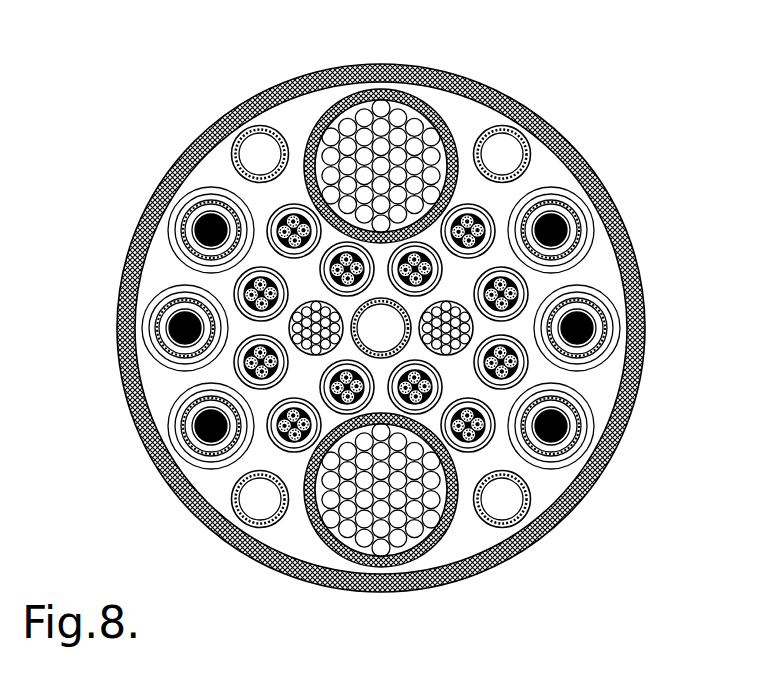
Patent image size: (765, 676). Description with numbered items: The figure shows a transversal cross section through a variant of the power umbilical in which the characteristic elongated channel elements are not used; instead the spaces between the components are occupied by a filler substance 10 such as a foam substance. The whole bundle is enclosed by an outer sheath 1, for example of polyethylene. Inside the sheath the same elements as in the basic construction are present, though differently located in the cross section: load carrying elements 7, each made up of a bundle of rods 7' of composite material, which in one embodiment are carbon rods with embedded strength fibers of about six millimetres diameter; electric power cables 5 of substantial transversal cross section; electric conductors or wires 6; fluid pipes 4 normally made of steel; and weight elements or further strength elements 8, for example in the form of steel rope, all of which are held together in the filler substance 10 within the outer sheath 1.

The outer sheath 1 is at (134, 240).
The filler substance 10 is at (150, 387).
The load carrying element 7 is at (411, 118).
The rods 7' is at (441, 147).
The fluid pipes 4 is at (530, 152).
The electric power cables 5 is at (563, 228).
The electric conductors/wires 6 is at (517, 292).
The weight elements or strength elements 8 is at (462, 323).